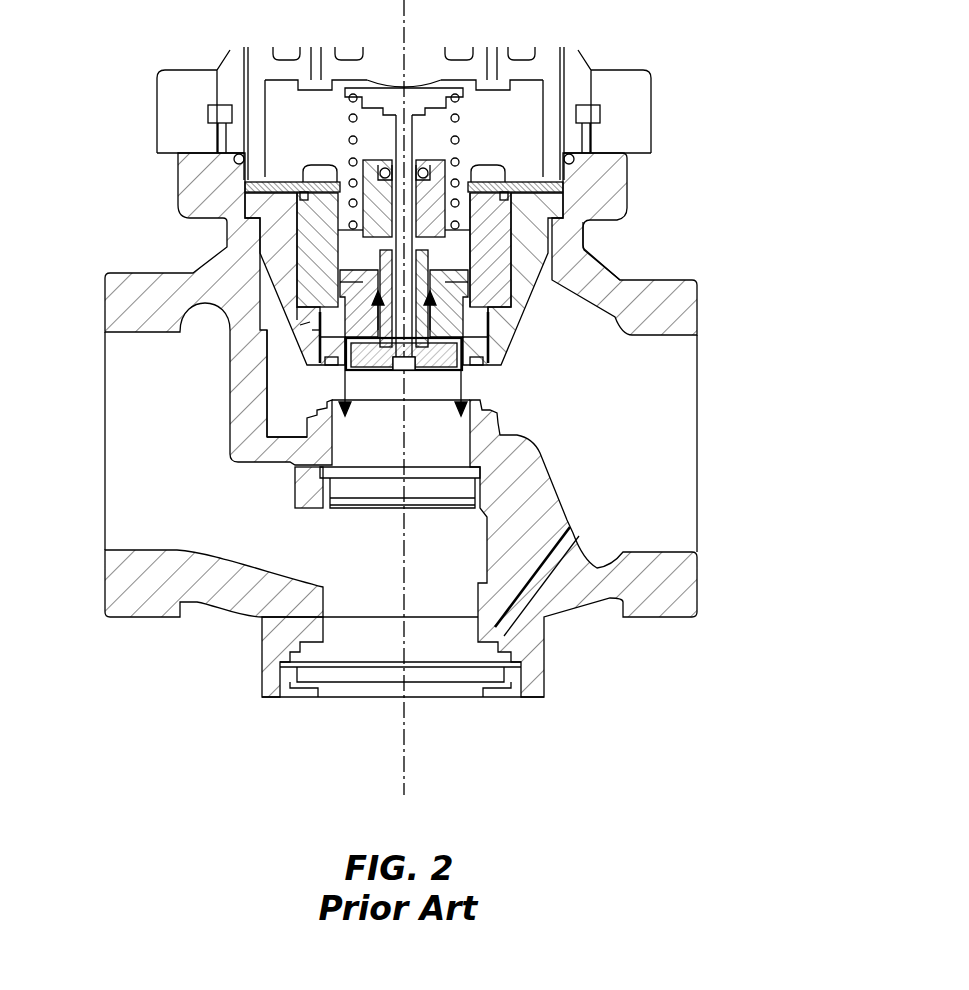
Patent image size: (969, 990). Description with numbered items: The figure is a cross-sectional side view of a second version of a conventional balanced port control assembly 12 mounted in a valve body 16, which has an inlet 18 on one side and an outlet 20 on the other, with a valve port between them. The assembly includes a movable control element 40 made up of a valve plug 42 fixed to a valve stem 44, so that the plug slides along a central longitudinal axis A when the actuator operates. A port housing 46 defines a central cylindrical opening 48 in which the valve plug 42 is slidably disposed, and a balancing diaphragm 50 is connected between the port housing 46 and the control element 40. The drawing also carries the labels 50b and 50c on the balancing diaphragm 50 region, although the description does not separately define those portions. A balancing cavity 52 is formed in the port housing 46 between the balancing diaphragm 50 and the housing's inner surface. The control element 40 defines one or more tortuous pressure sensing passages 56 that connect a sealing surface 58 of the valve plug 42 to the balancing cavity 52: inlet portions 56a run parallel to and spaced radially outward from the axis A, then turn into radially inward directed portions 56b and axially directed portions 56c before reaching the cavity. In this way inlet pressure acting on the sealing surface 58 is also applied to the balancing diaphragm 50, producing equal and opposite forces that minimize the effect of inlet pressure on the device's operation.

The balanced port control assembly 12 is at (477, 212).
The valve body 16 is at (415, 425).
The inlet 18 is at (105, 437).
The outlet 20 is at (683, 373).
The control element 40 is at (320, 343).
The valve plug 42 is at (475, 365).
The valve stem 44 is at (404, 133).
The port housing 46 is at (528, 222).
The central cylindrical opening 48 is at (497, 335).
The balancing diaphragm 50 is at (468, 305).
The cage opening 50b is at (312, 330).
The cage opening 50c is at (303, 310).
The balancing cavity 52 is at (300, 192).
The pressure sensing passages 56 is at (372, 343).
The inlet portions 56a is at (300, 443).
The radially inward directed portions 56b is at (318, 370).
The axially directed portions 56c is at (305, 325).
The sealing surface 58 is at (443, 370).
The central longitudinal axis A is at (404, 772).